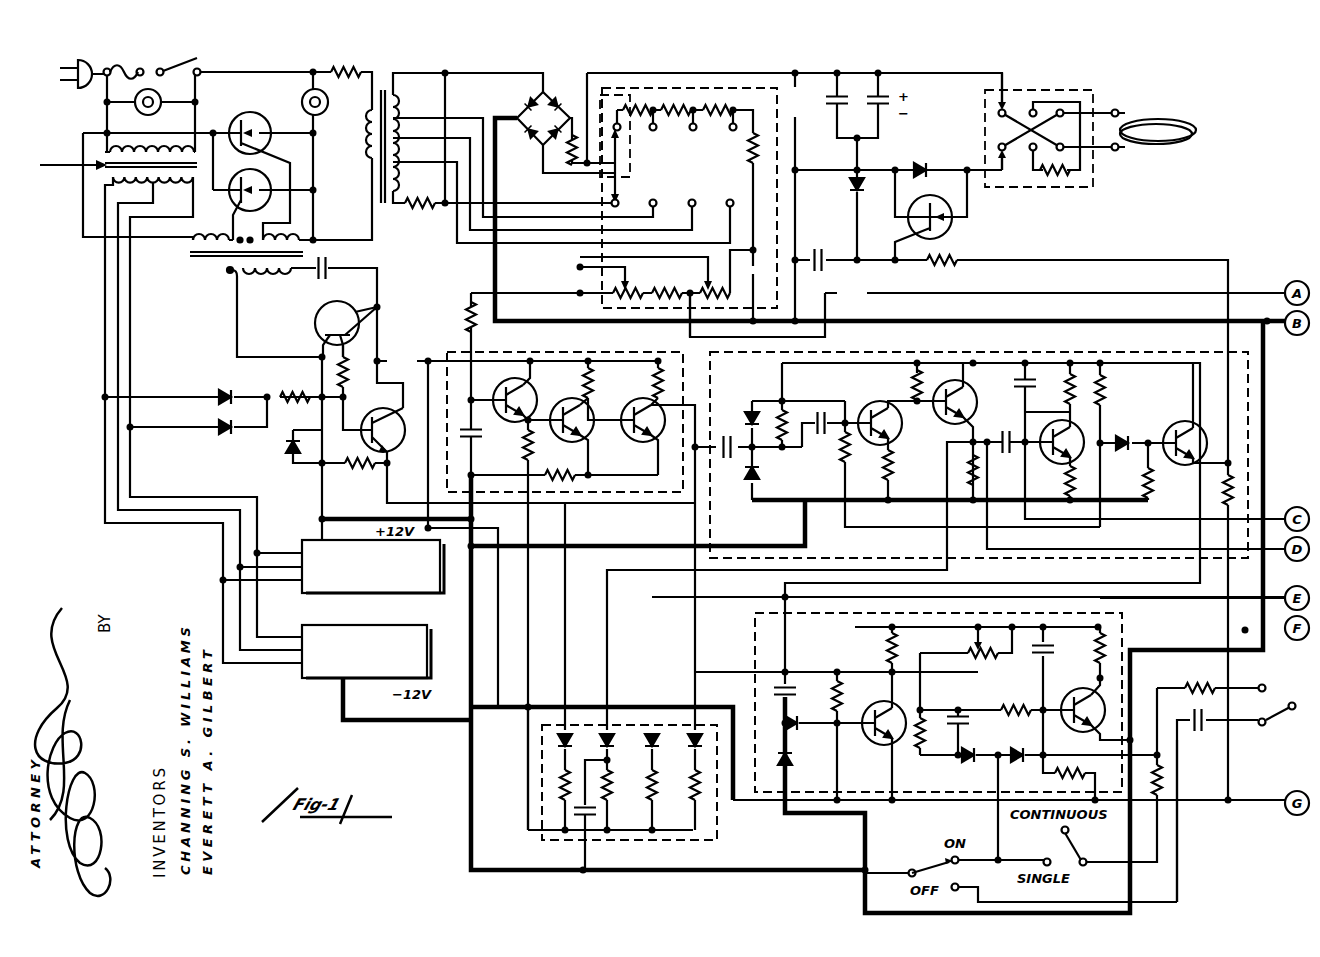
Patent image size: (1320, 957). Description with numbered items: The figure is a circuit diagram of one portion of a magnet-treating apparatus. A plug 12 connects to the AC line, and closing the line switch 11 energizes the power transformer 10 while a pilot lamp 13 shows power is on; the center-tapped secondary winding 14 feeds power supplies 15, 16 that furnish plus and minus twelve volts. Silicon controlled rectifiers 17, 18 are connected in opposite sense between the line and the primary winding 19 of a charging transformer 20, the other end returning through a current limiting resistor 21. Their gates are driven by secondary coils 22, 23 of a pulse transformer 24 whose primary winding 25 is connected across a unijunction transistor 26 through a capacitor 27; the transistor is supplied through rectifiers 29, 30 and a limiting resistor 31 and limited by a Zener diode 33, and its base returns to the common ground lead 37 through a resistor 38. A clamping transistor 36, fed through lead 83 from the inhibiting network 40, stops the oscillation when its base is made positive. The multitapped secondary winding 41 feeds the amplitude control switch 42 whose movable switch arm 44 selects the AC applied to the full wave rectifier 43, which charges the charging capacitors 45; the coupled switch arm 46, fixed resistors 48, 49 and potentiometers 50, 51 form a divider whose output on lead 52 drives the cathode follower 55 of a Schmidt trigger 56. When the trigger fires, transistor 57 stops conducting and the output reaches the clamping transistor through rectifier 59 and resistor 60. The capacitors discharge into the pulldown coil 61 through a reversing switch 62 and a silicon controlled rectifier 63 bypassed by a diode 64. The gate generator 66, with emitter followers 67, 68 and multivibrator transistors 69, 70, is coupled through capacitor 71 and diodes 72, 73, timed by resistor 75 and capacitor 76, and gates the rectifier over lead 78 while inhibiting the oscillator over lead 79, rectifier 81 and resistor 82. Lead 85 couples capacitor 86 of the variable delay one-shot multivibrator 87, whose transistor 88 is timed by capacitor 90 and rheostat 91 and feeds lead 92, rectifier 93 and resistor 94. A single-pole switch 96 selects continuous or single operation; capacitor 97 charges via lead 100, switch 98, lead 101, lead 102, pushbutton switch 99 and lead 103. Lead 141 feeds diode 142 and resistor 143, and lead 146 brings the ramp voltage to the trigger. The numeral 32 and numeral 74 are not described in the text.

The power transformer 10 is at (118, 158).
The line switch 11 is at (161, 68).
The plug 12 is at (84, 89).
The pilot lamp 13 is at (158, 109).
The center-tapped secondary winding 14 is at (118, 183).
The power supply 15 is at (316, 541).
The power supply 16 is at (304, 626).
The silicon controlled rectifier 17 is at (256, 115).
The silicon controlled rectifier 18 is at (237, 191).
The primary winding 19 is at (364, 146).
The charging transformer 20 is at (383, 90).
The current limiting resistor 21 is at (340, 70).
The secondary coil 22 is at (300, 238).
The secondary coil 23 is at (190, 245).
The pulse transformer 24 is at (215, 260).
The primary winding 25 is at (238, 275).
The unijunction transistor 26 is at (316, 313).
The capacitor 27 is at (327, 268).
The rectifier 29 is at (240, 395).
The rectifier 30 is at (235, 429).
The limiting resistor 31 is at (297, 394).
The resistor 32 is at (350, 359).
The Zener diode 33 is at (285, 456).
The clamping transistor 36 is at (406, 439).
The common ground lead 37 is at (498, 189).
The resistor 38 is at (380, 468).
The inhibiting network 40 is at (691, 836).
The multitapped secondary winding 41 is at (399, 109).
The amplitude control switch 42 is at (652, 92).
The full wave rectifier 43 is at (558, 99).
The movable switch arm 44 is at (606, 189).
The charging capacitors 45 is at (834, 91).
The switch arm 46 is at (627, 147).
The fixed resistor 48 is at (746, 147).
The fixed resistor 49 is at (665, 300).
The potentiometer 50 is at (705, 286).
The potentiometer 51 is at (603, 303).
The lead 52 is at (530, 293).
The cathode follower 55 is at (513, 361).
The Schmidt trigger 56 is at (462, 353).
The transistor 57 is at (644, 399).
The rectifier 59 is at (563, 729).
The resistor 60 is at (556, 791).
The pulldown coil 61 is at (1144, 116).
The reversing switch 62 is at (1032, 94).
The silicon controlled rectifier 63 is at (952, 225).
The diode 64 is at (929, 165).
The gate generator 66 is at (869, 558).
The emitter follower 67 is at (958, 363).
The emitter follower 68 is at (1192, 420).
The multivibrator transistor 69 is at (895, 397).
The multivibrator transistor 70 is at (1062, 458).
The capacitor 71 is at (728, 429).
The diode 72 is at (757, 404).
The diode 73 is at (750, 487).
The capacitor 74 is at (1028, 375).
The resistor 75 is at (1072, 375).
The capacitor 76 is at (1002, 435).
The lead 78 is at (1073, 263).
The lead 79 is at (1205, 480).
The rectifier 81 is at (605, 729).
The resistor 82 is at (613, 788).
The lead 83 is at (525, 747).
The lead 85 is at (960, 475).
The capacitor 86 is at (790, 686).
The variable delay one-shot multivibrator 87 is at (763, 795).
The multivibrator transistor 88 is at (1045, 650).
The capacitor 90 is at (970, 732).
The rheostat 91 is at (990, 658).
The lead 92 is at (1032, 673).
The rectifier 93 is at (695, 729).
The resistor 94 is at (695, 790).
The single-pole switch 96 is at (1073, 842).
The capacitor 97 is at (1198, 736).
The switch 98 is at (1290, 694).
The pushbutton switch 99 is at (930, 863).
The lead 100 is at (1232, 668).
The lead 101 is at (1227, 724).
The lead 102 is at (1178, 840).
The lead 103 is at (745, 875).
The lead 141 is at (1172, 598).
The diode 142 is at (654, 730).
The resistor 143 is at (650, 805).
The lead 146 is at (1254, 291).